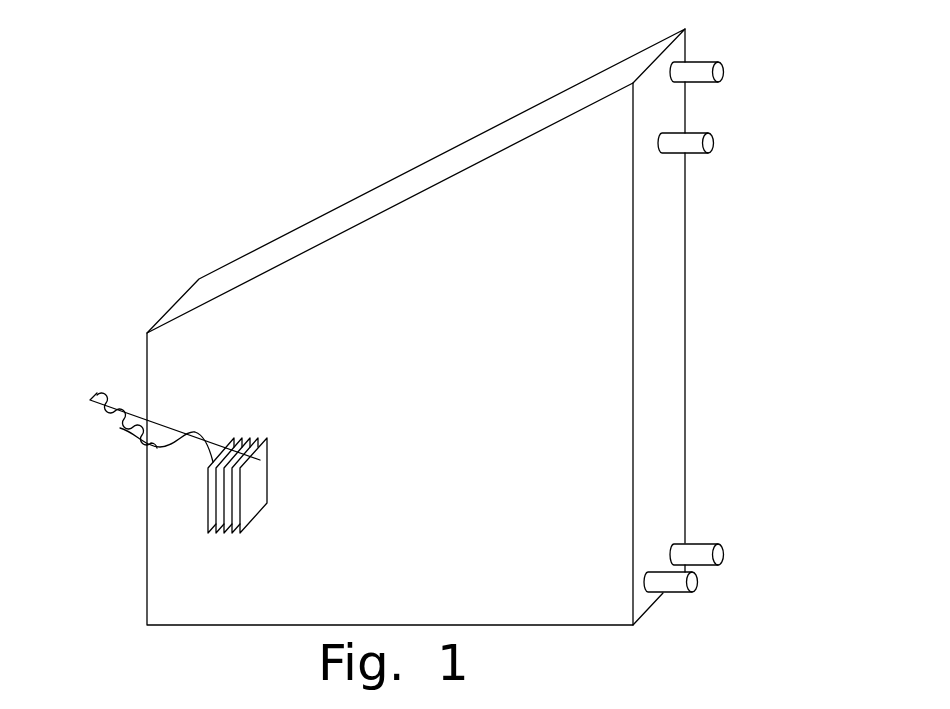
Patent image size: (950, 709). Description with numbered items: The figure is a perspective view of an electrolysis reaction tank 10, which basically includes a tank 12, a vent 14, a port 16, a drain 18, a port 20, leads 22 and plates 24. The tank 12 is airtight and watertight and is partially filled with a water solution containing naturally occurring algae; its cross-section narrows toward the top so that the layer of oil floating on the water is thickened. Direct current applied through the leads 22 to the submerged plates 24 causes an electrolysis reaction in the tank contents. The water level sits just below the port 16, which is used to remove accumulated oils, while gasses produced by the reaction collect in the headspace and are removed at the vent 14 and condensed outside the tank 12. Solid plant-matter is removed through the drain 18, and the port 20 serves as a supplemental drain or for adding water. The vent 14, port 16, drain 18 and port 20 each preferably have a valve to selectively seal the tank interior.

The electrolysis reaction tank 10 is at (416, 336).
The tank 12 is at (587, 365).
The vent 14 is at (705, 63).
The port 16 is at (697, 153).
The drain 18 is at (697, 544).
The port 20 is at (670, 592).
The leads 22 is at (120, 428).
The plates 24 is at (215, 505).